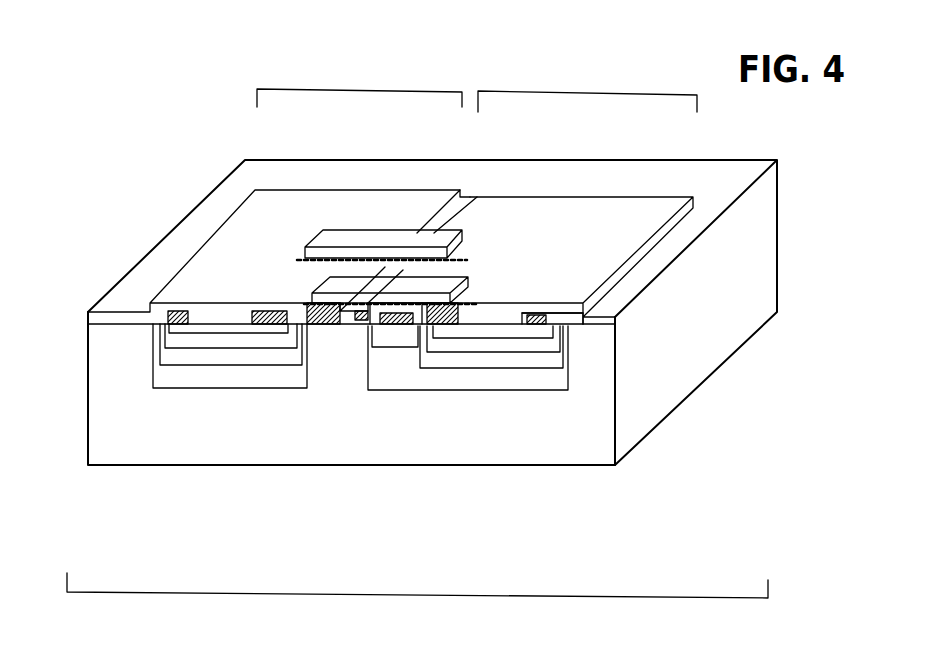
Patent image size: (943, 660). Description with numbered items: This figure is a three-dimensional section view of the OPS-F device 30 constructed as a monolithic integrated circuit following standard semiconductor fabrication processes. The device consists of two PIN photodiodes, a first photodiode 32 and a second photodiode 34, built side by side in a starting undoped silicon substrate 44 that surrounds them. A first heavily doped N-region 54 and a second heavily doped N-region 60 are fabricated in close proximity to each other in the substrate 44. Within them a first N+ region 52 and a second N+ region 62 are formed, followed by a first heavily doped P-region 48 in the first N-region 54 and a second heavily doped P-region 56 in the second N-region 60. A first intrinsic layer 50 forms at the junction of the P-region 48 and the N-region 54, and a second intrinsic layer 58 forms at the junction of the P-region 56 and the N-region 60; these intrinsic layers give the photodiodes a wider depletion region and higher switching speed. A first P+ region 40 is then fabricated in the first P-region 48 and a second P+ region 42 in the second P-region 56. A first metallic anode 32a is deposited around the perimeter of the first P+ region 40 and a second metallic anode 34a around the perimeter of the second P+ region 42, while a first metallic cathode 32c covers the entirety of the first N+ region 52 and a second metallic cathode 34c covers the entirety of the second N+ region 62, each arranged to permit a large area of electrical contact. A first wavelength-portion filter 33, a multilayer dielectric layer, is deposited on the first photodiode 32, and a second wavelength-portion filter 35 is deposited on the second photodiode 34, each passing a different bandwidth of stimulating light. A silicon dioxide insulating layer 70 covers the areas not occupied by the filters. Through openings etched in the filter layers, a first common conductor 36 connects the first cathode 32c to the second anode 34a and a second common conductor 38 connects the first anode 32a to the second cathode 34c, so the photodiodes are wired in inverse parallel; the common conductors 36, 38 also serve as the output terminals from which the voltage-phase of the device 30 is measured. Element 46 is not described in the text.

The OPS-F device 30 is at (352, 595).
The first photodiode 32 is at (373, 88).
The first metallic anode 32a is at (313, 298).
The first metallic cathode 32c is at (235, 380).
The first bandwidth-portion filter 33 is at (345, 207).
The second photodiode 34 is at (573, 90).
The second metallic anode 34a is at (540, 330).
The second metallic cathode 34c is at (470, 252).
The second bandwidth-portion filter 35 is at (613, 195).
The first common conductor 36 is at (327, 285).
The second common conductor 38 is at (313, 230).
The first P+ region 40 is at (165, 387).
The second P+ region 42 is at (562, 335).
The silicon substrate 44 is at (362, 450).
The isolation trench 46 is at (428, 185).
The first heavily doped P-region 48 is at (195, 333).
The first intrinsic layer 50 is at (222, 342).
The first N+ region 52 is at (325, 330).
The first heavily doped N-region 54 is at (337, 372).
The second heavily doped P-region 56 is at (565, 327).
The second intrinsic layer 58 is at (545, 333).
The second heavily doped N-region 60 is at (518, 347).
The second N+ region 62 is at (445, 330).
The silicon dioxide insulating layer 70 is at (712, 187).